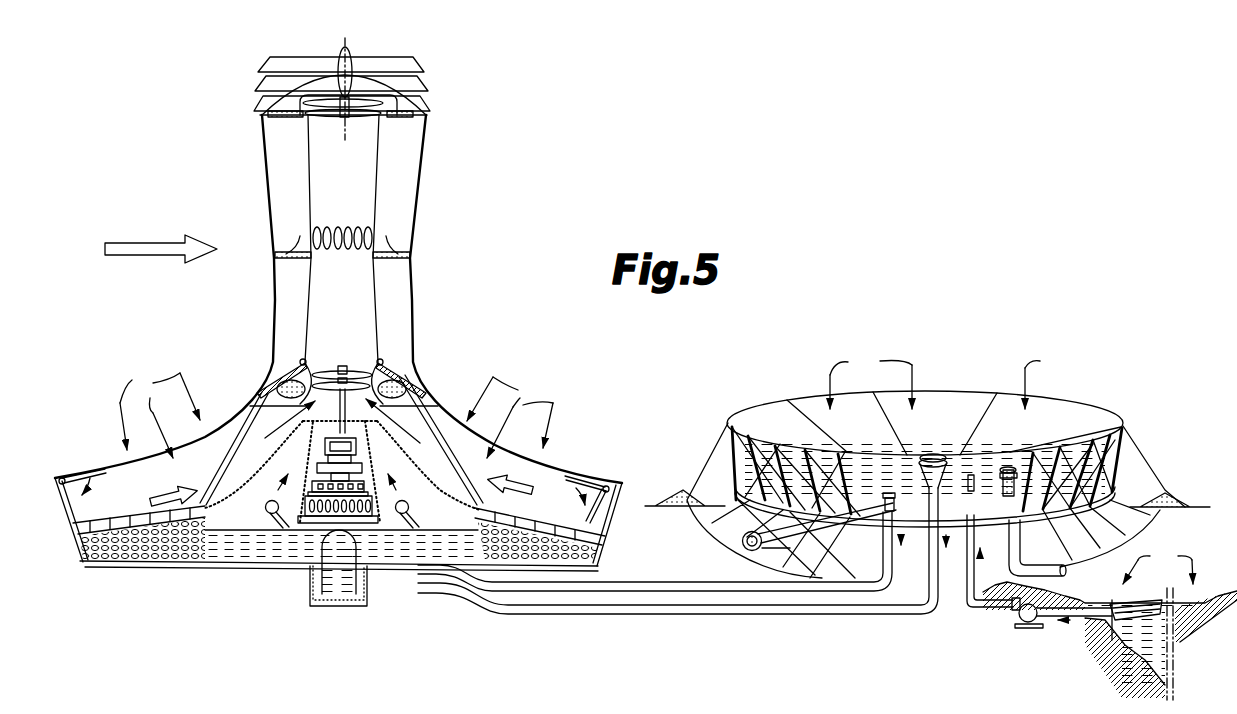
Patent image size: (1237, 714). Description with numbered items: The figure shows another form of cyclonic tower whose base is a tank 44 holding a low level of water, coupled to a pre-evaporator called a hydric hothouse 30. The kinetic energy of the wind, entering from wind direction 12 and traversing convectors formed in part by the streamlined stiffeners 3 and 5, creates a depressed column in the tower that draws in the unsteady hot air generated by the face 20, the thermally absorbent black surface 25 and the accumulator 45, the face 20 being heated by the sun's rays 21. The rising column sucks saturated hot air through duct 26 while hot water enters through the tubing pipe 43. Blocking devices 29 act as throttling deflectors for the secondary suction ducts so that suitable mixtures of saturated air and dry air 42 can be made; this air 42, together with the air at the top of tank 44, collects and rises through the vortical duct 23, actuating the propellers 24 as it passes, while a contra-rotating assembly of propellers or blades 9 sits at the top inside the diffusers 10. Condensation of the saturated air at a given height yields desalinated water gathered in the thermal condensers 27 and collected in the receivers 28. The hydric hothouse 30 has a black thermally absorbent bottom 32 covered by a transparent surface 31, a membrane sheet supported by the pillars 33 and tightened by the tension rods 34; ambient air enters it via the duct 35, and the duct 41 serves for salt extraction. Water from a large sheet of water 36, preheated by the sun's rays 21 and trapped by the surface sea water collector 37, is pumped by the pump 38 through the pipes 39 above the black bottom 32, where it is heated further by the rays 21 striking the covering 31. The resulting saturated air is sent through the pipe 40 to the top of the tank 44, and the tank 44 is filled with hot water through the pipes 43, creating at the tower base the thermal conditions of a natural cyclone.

The stiffener 3 is at (287, 252).
The stiffener 5 is at (397, 252).
The assembly of propellers or blades 9 is at (338, 114).
The diffusers 10 is at (257, 69).
The wind direction arrow 12 is at (148, 243).
The face 20 is at (110, 468).
The sun's rays 21 is at (637, 464).
The vortical duct 23 is at (375, 146).
The propellers 24 is at (346, 371).
The thermally absorbent black surface 25 is at (136, 512).
The duct 26 is at (322, 382).
The thermal condensers 27 is at (345, 228).
The receivers 28 is at (387, 364).
The blocking devices 29 is at (583, 478).
The hydric hothouse 30 is at (778, 398).
The transparent surface (membrane sheet covering) 31 is at (955, 412).
The black thermally absorbent bottom 32 is at (905, 462).
The pillars 33 is at (1118, 441).
The tension rods 34 is at (1148, 467).
The duct 35 is at (1067, 571).
The sheet of water 36 is at (1192, 601).
The surface sea water collector 37 is at (1118, 634).
The pump 38 is at (1025, 624).
The pipes 39 is at (972, 608).
The pipe 40 is at (818, 614).
The duct 41 is at (745, 545).
The dry air 42 is at (548, 475).
The pipes 43 is at (638, 560).
The tank 44 is at (228, 555).
The accumulator 45 is at (157, 558).